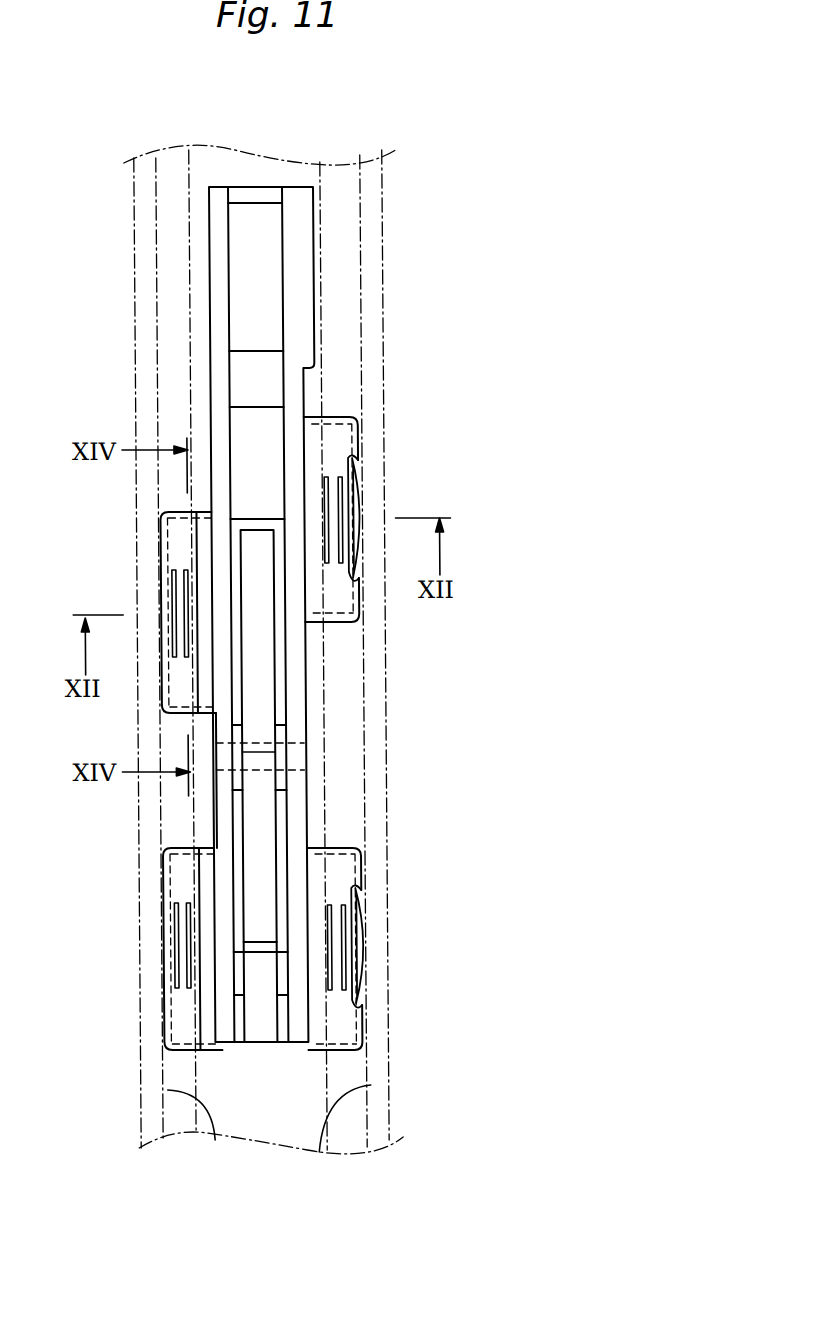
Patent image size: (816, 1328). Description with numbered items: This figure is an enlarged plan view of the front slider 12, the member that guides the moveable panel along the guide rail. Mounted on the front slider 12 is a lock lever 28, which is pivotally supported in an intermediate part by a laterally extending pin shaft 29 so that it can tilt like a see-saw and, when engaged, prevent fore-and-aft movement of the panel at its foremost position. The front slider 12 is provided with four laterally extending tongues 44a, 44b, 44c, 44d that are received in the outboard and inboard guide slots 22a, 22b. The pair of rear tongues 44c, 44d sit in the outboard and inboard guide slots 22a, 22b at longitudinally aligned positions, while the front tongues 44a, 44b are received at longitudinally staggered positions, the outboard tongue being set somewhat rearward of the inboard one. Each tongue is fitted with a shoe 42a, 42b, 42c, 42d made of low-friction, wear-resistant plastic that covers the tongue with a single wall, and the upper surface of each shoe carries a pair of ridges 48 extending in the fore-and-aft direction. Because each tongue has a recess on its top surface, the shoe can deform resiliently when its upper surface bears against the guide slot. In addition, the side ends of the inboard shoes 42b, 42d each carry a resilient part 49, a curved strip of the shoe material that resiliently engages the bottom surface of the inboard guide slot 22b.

The front slider 12 is at (293, 301).
The lock lever 28 is at (260, 682).
The pin shaft 29 is at (257, 771).
The shoe 42a is at (162, 524).
The inboard shoe 42b is at (350, 438).
The shoe 42c is at (162, 1024).
The inboard shoe 42d is at (354, 1028).
The front inboard tongue 44a is at (168, 572).
The front tongue 44b is at (353, 604).
The rear tongue 44c is at (160, 885).
The rear tongue 44d is at (350, 860).
The ridges 48 is at (171, 568).
The resilient part 49 is at (357, 518).
The outboard guide slot 22a is at (207, 1142).
The inboard guide slot 22b is at (311, 1154).